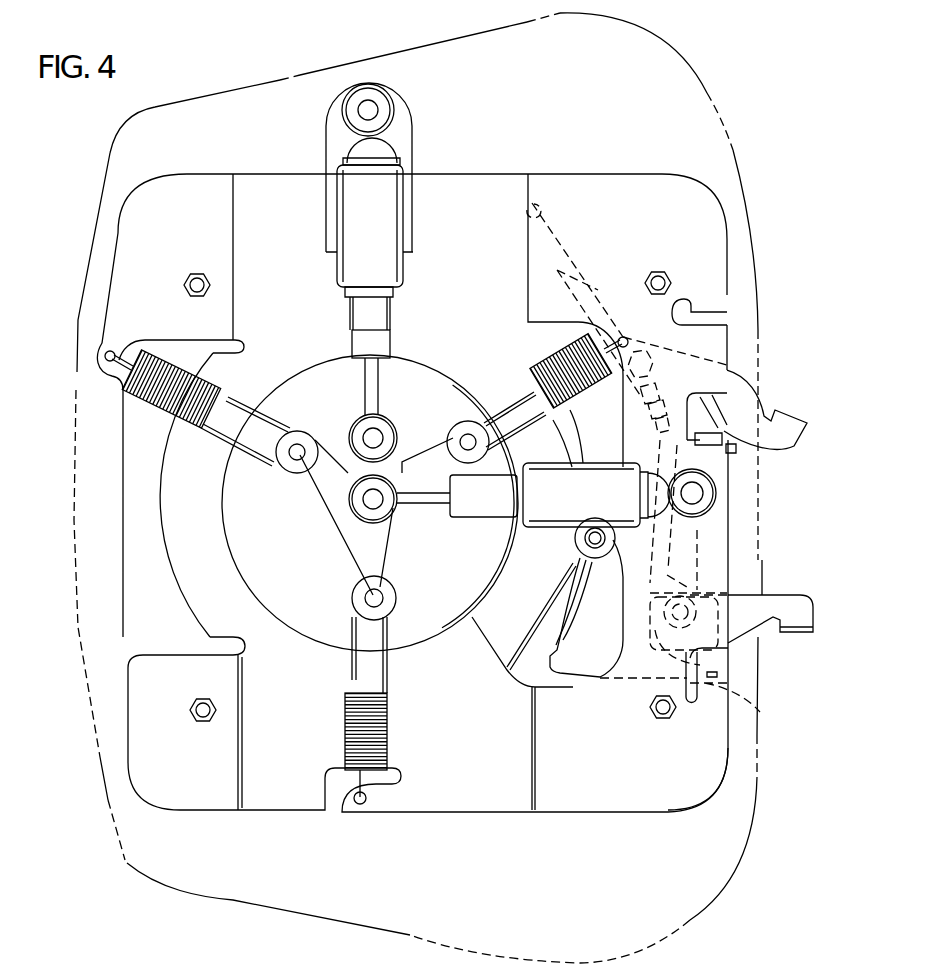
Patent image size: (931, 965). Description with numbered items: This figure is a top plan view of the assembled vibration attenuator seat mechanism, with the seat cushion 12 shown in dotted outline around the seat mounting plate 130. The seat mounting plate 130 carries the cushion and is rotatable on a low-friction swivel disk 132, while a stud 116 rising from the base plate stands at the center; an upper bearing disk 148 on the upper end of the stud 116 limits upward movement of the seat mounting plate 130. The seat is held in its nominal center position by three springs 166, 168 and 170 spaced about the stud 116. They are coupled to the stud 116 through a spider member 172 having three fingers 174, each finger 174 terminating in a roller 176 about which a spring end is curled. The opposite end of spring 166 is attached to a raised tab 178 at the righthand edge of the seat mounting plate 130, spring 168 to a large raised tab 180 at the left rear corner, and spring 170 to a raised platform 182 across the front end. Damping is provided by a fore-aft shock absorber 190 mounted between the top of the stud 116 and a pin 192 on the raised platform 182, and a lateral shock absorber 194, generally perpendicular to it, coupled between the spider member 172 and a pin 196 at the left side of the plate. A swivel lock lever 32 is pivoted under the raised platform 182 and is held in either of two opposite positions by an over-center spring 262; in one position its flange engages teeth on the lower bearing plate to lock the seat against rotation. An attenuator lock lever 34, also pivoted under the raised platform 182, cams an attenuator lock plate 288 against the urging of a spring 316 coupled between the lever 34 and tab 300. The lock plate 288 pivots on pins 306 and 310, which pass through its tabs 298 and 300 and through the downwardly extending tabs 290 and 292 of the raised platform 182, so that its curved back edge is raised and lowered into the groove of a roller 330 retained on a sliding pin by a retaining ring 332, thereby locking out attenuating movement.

The seat cushion 12 is at (718, 888).
The swivel lock lever 32 is at (788, 440).
The attenuator lock lever 34 is at (800, 603).
The stud 116 is at (368, 497).
The seat mounting plate 130 is at (449, 754).
The swivel disk 132 is at (527, 623).
The upper bearing disk 148 is at (410, 628).
The spring 166 is at (355, 716).
The spring 168 is at (184, 416).
The spring 170 is at (532, 370).
The spider member 172 is at (357, 543).
The finger 174 is at (383, 585).
The roller 176 is at (363, 597).
The raised tab 178 is at (375, 800).
The large raised tab 180 is at (108, 348).
The raised platform 182 is at (703, 782).
The fore-aft shock absorber 190 is at (542, 515).
The pin 192 is at (705, 497).
The lateral shock absorber 194 is at (382, 266).
The pin 196 is at (368, 100).
The spring 262 is at (593, 283).
The attenuator lock plate 288 is at (578, 665).
The tab 290 is at (725, 675).
The tab 292 is at (733, 430).
The tab 298 is at (760, 705).
The tab 300 is at (736, 450).
The pin 306 is at (710, 668).
The pin 310 is at (735, 395).
The spring 316 is at (693, 567).
The roller 330 is at (573, 622).
The retaining ring 332 is at (580, 607).